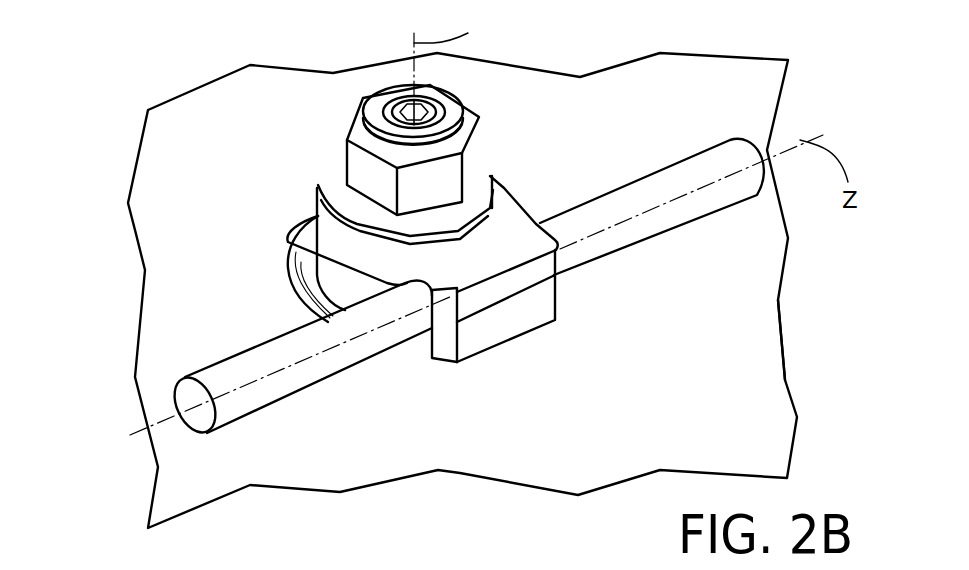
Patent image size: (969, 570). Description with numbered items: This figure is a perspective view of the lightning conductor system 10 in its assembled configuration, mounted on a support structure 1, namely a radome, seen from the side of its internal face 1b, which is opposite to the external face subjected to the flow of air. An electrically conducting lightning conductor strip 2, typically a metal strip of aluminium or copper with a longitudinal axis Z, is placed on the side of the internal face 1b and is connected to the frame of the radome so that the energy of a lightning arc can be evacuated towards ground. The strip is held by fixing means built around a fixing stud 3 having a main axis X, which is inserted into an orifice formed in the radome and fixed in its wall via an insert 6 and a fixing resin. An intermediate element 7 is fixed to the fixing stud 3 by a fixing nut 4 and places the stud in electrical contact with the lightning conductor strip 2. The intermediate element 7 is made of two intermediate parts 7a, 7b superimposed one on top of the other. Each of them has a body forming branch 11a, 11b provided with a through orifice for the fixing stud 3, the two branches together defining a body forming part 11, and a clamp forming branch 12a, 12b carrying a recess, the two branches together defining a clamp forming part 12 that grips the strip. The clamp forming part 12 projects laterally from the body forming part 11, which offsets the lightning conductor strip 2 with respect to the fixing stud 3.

The support structure 1 is at (310, 458).
The internal face 1b is at (753, 276).
The lightning conductor strip 2 is at (695, 177).
The fixing stud 3 is at (408, 113).
The fixing nut 4 is at (372, 175).
The insert 6 is at (308, 267).
The intermediate element 7 is at (465, 294).
The intermediate part 7a is at (510, 322).
The intermediate part 7b is at (532, 278).
The lightning conductor system 10 is at (126, 145).
The body forming part 11 is at (335, 197).
The body forming branch 11a is at (325, 265).
The body forming branch 11b is at (333, 187).
The clamp forming part 12 is at (460, 363).
The clamp forming branch 12a is at (443, 338).
The clamp forming branch 12b is at (447, 271).